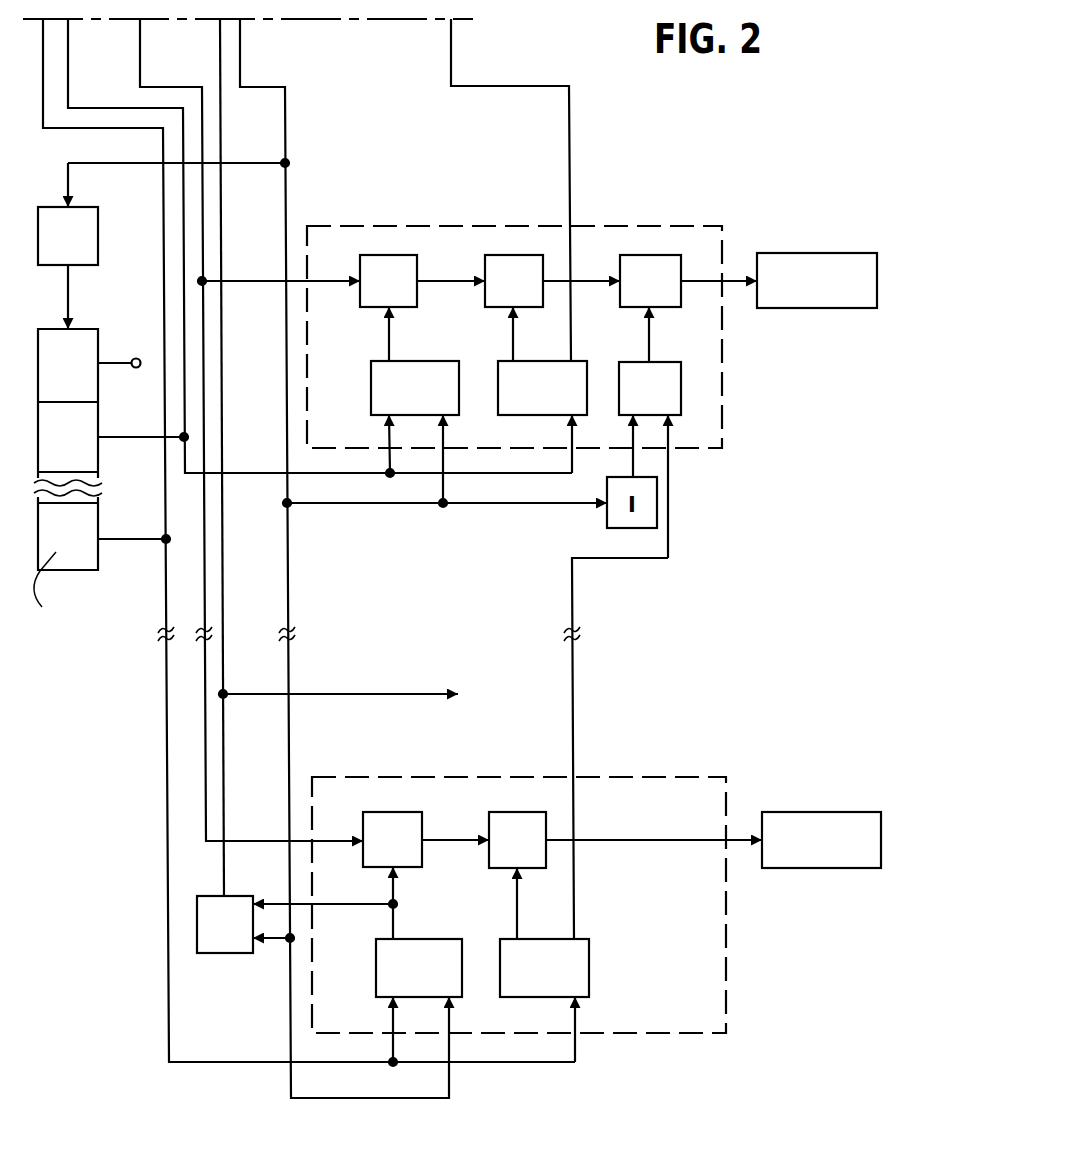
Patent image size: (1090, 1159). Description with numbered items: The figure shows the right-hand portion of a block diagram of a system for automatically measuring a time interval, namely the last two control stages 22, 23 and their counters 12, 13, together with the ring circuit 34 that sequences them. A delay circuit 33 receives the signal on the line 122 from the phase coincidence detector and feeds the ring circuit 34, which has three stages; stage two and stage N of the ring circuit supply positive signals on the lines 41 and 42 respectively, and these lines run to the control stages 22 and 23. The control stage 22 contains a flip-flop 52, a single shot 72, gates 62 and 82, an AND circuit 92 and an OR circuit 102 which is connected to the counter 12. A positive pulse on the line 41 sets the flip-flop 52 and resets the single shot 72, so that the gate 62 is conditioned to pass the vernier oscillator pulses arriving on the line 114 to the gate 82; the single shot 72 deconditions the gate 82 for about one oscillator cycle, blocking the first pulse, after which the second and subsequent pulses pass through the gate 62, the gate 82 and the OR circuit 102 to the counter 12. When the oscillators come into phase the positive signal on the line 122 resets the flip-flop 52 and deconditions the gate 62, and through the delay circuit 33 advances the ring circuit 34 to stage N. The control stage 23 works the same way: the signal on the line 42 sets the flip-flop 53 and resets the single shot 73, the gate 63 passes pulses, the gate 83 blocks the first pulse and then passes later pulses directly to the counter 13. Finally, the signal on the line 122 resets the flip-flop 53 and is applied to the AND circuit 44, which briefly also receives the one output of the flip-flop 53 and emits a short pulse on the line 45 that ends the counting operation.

The line 114 is at (140, 55).
The line 122 is at (241, 68).
The delay circuit 33 is at (98, 209).
The ring circuit 34 is at (99, 570).
The line 41 is at (192, 476).
The line 42 is at (166, 790).
The line 45 is at (224, 810).
The AND circuit 44 is at (219, 953).
The gate 62 is at (407, 255).
The gate 82 is at (532, 255).
The OR circuit 102 is at (664, 255).
The counter 12 is at (845, 253).
The flip-flop 52 is at (460, 370).
The single shot 72 is at (588, 370).
The AND circuit 92 is at (682, 372).
The control stage 22 is at (724, 375).
The gate 63 is at (403, 812).
The gate 83 is at (501, 812).
The counter 13 is at (831, 812).
The flip-flop 53 is at (464, 957).
The single shot 73 is at (592, 957).
The control stage 23 is at (728, 938).